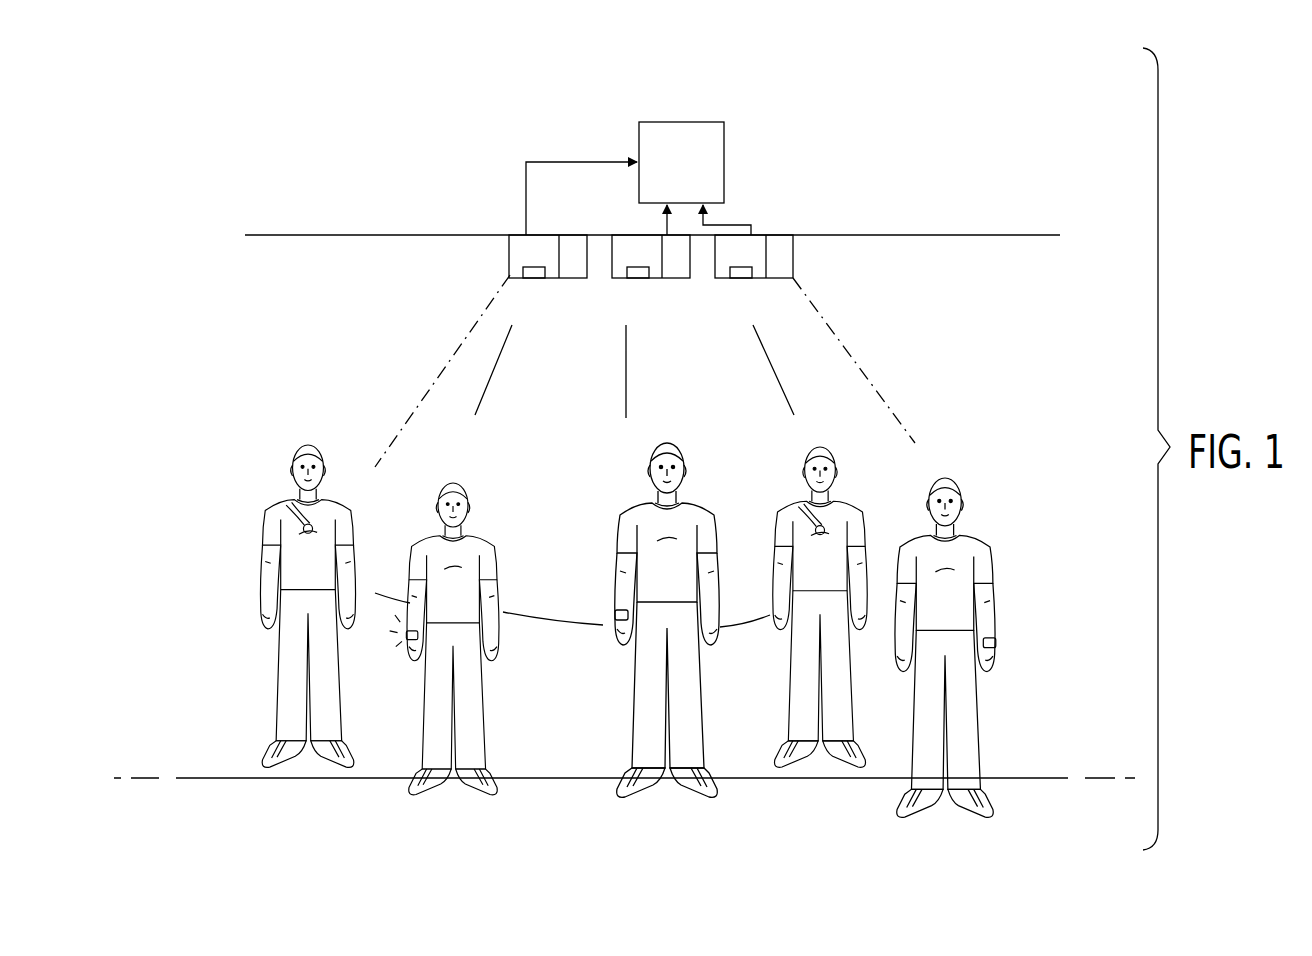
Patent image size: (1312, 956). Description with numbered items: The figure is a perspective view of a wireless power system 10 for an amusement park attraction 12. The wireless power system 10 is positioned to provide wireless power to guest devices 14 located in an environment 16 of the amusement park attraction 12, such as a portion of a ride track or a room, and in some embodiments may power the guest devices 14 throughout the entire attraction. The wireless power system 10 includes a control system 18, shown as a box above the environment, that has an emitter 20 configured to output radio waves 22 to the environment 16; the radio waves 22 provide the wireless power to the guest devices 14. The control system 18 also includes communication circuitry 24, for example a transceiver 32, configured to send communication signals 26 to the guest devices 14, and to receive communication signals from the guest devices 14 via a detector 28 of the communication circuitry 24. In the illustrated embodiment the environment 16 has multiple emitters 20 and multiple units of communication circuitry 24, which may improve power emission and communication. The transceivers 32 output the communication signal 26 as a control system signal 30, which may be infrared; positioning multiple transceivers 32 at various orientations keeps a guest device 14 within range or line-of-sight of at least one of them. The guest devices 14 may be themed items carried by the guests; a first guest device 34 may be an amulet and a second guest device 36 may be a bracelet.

The wireless power system 10 is at (666, 217).
The amusement park attraction 12 is at (1000, 151).
The guest device 14 is at (621, 591).
The environment 16 is at (624, 566).
The control system 18 is at (632, 136).
The emitter 20 is at (684, 271).
The radio waves 22 is at (420, 403).
The communication circuitry 24 is at (528, 248).
The communication signal 26 is at (634, 388).
The detector 28 is at (728, 315).
The control system signal 30 is at (495, 370).
The transceiver 32 is at (533, 279).
The first guest device 34 is at (295, 509).
The second guest device 36 is at (407, 633).